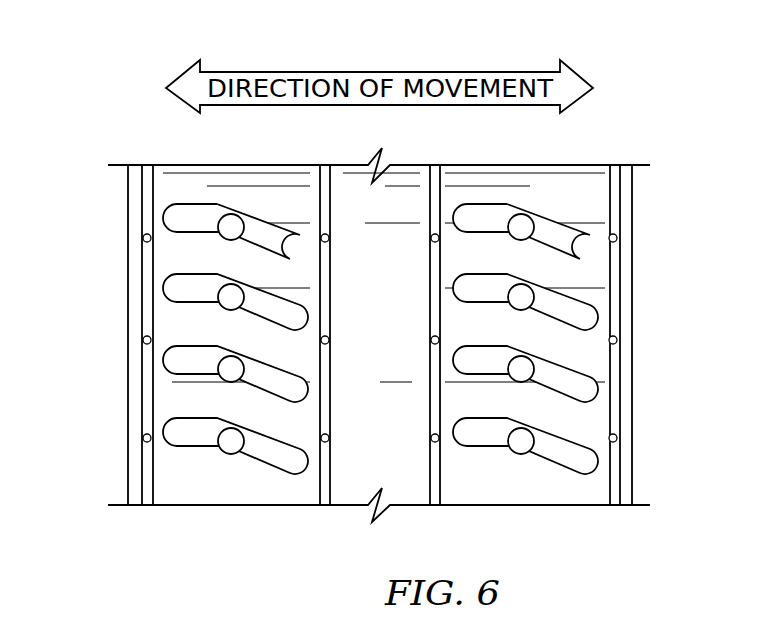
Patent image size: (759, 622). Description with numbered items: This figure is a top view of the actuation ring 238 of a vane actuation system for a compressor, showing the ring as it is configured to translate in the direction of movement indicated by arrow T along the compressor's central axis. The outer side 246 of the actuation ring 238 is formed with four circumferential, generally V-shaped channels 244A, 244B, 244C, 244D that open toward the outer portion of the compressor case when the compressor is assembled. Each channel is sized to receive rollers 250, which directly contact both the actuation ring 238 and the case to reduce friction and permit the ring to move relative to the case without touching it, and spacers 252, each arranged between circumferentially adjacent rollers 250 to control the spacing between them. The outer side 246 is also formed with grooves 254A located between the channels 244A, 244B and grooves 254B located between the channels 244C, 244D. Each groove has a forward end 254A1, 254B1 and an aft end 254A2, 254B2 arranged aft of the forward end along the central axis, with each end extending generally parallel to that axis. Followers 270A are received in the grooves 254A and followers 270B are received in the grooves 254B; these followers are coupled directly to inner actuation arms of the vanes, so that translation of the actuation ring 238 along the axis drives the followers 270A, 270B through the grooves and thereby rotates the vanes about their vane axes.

The actuation ring 238 is at (597, 162).
The channel 244A is at (143, 398).
The channel 244B is at (319, 488).
The channel 244C is at (428, 295).
The channel 244D is at (623, 287).
The outer side 246 is at (403, 287).
The rollers 250 is at (426, 240).
The spacers 252 is at (311, 292).
The grooves 254A is at (241, 340).
The forward end 254A1 is at (185, 211).
The aft end 254A2 is at (293, 246).
The grooves 254B is at (581, 292).
The forward end 254B1 is at (483, 210).
The aft end 254B2 is at (588, 245).
The followers 270A is at (243, 311).
The followers 270B is at (510, 378).
The arrow T is at (480, 71).